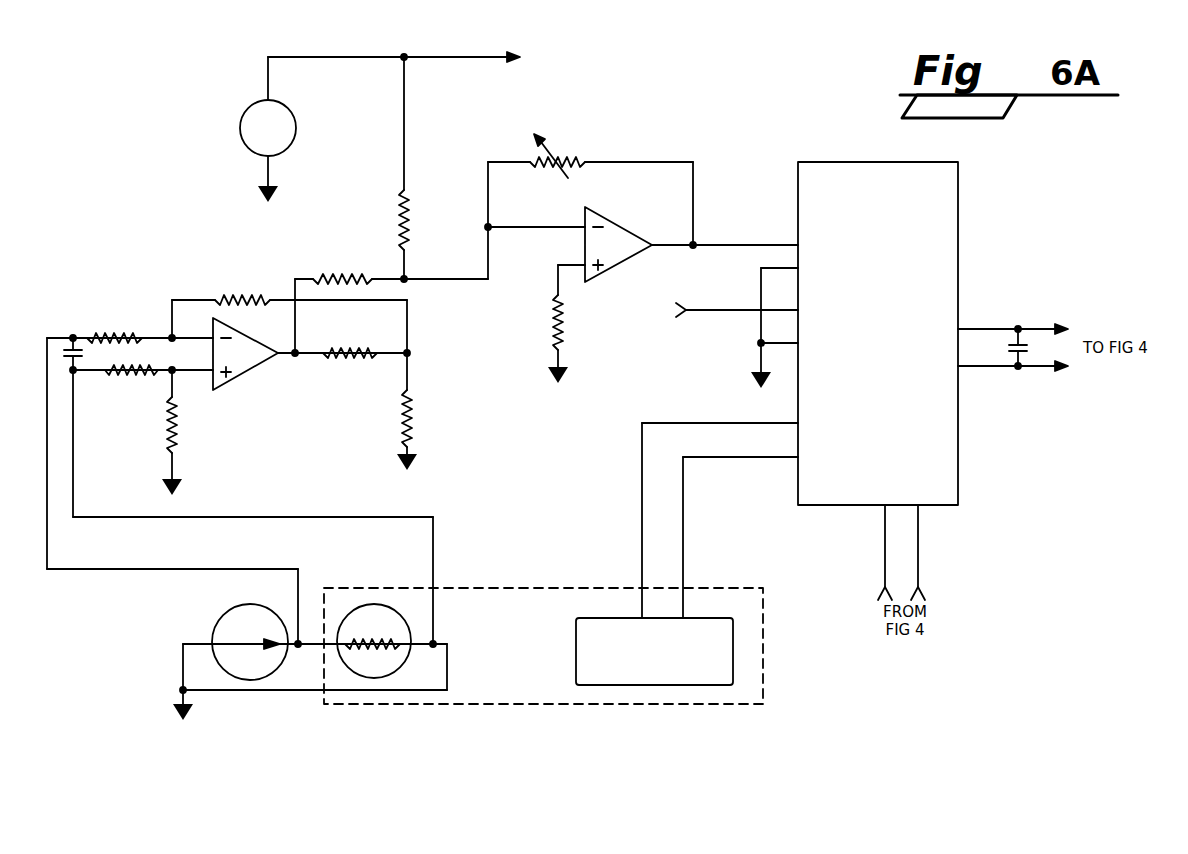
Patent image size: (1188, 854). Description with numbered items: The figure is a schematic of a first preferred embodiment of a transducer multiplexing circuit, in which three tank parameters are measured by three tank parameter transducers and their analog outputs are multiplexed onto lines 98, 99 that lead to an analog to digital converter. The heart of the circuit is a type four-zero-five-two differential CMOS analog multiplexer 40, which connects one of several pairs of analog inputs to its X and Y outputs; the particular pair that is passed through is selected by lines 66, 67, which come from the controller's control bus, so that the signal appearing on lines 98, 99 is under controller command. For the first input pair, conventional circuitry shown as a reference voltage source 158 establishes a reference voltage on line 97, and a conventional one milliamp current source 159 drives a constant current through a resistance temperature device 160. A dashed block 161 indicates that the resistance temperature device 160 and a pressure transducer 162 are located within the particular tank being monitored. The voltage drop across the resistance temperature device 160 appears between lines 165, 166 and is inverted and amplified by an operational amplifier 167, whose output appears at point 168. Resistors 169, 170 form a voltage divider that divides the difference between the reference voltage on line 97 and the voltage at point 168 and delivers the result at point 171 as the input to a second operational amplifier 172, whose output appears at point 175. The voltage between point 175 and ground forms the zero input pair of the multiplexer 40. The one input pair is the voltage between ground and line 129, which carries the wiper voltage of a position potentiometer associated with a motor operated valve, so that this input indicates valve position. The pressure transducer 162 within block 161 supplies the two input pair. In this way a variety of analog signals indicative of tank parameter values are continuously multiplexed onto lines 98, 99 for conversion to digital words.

The reference voltage source 158 is at (242, 122).
The reference voltage line 97 is at (457, 58).
The resistor 169 is at (398, 210).
The resistor 170 is at (346, 277).
The input point 171 is at (406, 282).
The second operational amplifier 172 is at (622, 263).
The output point 175 is at (697, 241).
The line 129 is at (720, 310).
The analog multiplexer 40 is at (958, 226).
The line 98 is at (1040, 327).
The line 99 is at (1040, 368).
The line 67 is at (885, 556).
The line 66 is at (918, 548).
The operational amplifier 167 is at (250, 370).
The output point 168 is at (296, 356).
The line 166 is at (213, 517).
The line 165 is at (203, 569).
The one milliamp current source 159 is at (223, 620).
The resistance temperature device 160 is at (402, 608).
The block 161 is at (552, 587).
The pressure transducer 162 is at (576, 655).